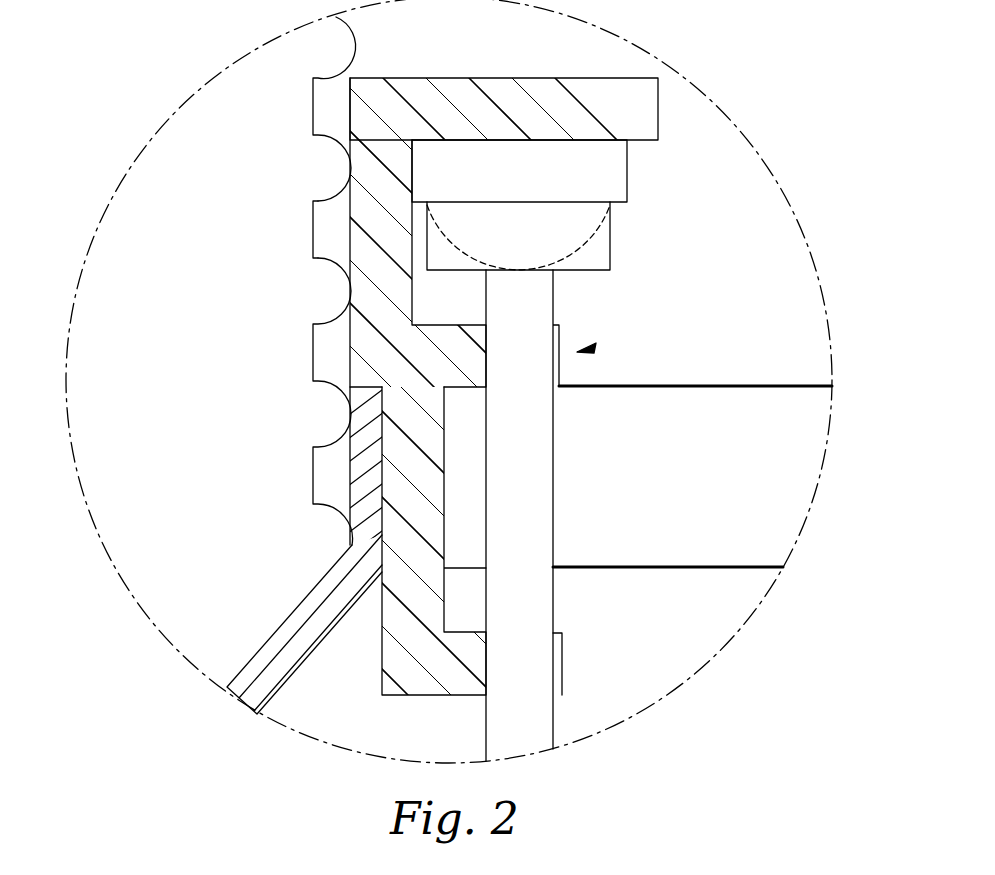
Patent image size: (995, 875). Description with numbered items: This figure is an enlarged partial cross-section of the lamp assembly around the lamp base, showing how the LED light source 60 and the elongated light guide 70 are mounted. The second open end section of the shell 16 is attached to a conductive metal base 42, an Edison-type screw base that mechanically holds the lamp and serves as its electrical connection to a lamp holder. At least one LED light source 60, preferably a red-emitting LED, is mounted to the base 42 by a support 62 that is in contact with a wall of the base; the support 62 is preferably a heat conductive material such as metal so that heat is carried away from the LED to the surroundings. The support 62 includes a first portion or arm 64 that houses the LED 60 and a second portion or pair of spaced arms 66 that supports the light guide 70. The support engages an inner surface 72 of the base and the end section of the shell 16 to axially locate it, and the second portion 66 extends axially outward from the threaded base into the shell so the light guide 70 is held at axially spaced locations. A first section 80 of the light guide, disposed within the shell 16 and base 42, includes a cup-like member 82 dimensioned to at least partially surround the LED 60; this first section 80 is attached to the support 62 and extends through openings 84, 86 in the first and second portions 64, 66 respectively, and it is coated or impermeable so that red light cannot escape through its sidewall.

The shell 16 is at (283, 645).
The conductive metal base 42 is at (323, 105).
The LED light source 60 is at (607, 172).
The support 62 is at (360, 332).
The first portion or arm 64 is at (652, 107).
The second portion or pair of spaced arms 66 is at (400, 667).
The elongated light guide 70 is at (527, 593).
The inner surface 72 is at (327, 227).
The first section 80 is at (580, 351).
The cup-like member 82 is at (613, 240).
The opening 84 is at (555, 388).
The opening 86 is at (560, 697).